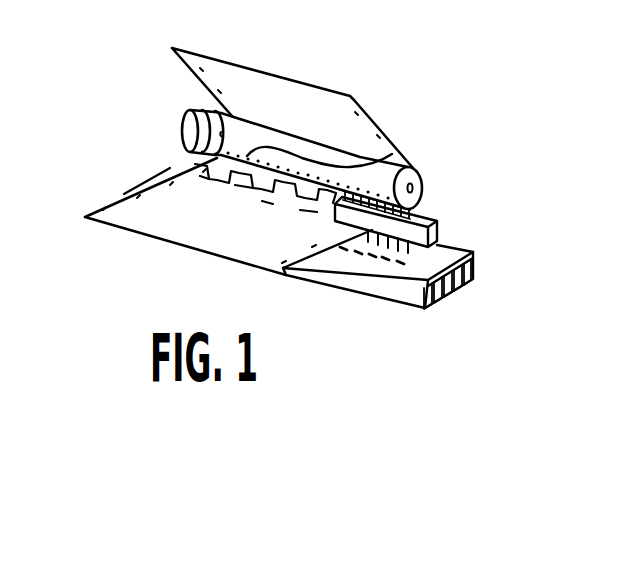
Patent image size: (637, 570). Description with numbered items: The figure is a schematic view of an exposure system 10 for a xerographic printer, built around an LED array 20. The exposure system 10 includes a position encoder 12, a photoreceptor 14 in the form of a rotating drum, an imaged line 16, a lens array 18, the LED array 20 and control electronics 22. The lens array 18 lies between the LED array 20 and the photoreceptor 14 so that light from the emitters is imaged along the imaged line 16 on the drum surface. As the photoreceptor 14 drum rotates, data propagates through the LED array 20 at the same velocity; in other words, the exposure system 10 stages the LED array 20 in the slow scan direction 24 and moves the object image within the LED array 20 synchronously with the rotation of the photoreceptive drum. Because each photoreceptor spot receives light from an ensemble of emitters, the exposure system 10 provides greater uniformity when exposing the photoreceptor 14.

The exposure system 10 is at (348, 74).
The position encoder 12 is at (183, 132).
The photoreceptor 14 is at (247, 142).
The imaged line 16 is at (392, 154).
The lens array 18 is at (440, 236).
The LED array 20 is at (462, 270).
The control electronics 22 is at (400, 258).
The slow scan direction 24 is at (115, 188).